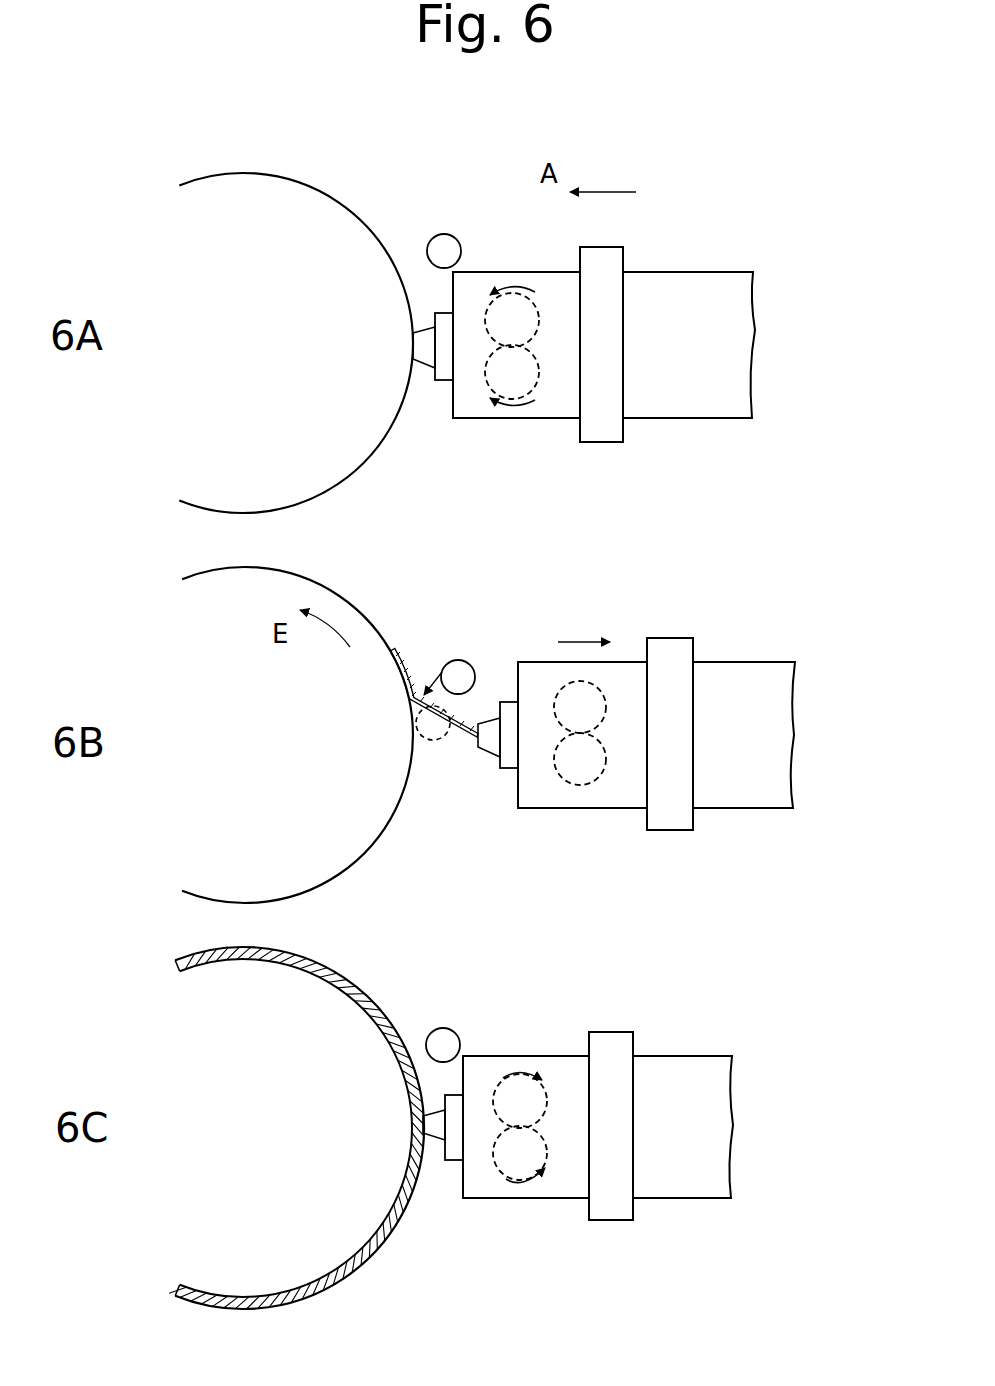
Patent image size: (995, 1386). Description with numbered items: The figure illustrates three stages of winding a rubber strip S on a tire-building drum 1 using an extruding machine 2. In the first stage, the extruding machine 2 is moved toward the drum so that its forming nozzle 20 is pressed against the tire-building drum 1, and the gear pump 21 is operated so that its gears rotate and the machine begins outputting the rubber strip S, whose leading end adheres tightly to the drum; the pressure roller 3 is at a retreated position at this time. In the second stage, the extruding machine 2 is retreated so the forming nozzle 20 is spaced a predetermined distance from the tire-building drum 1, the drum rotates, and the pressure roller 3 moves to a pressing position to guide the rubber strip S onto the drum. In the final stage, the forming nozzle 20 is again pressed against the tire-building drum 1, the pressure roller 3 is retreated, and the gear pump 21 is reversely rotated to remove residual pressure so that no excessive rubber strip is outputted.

In FIG. 6A, the tire-building drum 1 is at (340, 203).
In FIG. 6B, the tire-building drum 1 is at (304, 584).
In FIG. 6C, the tire-building drum 1 is at (370, 1247).
In FIG. 6A, the extruding machine 2 is at (678, 268).
In FIG. 6B, the extruding machine 2 is at (714, 657).
In FIG. 6C, the extruding machine 2 is at (659, 1050).
In FIG. 6A, the pressure roller 3 is at (445, 233).
In FIG. 6B, the pressure roller 3 is at (476, 671).
In FIG. 6C, the pressure roller 3 is at (443, 1045).
In FIG. 6A, the forming nozzle 20 is at (427, 358).
In FIG. 6B, the forming nozzle 20 is at (497, 758).
In FIG. 6C, the forming nozzle 20 is at (435, 1143).
In FIG. 6A, the gear pump 21 is at (515, 287).
In FIG. 6B, the gear pump 21 is at (580, 733).
In FIG. 6C, the gear pump 21 is at (494, 1074).
In FIG. 6B, the rubber strip S is at (404, 670).
In FIG. 6C, the rubber strip S is at (361, 999).